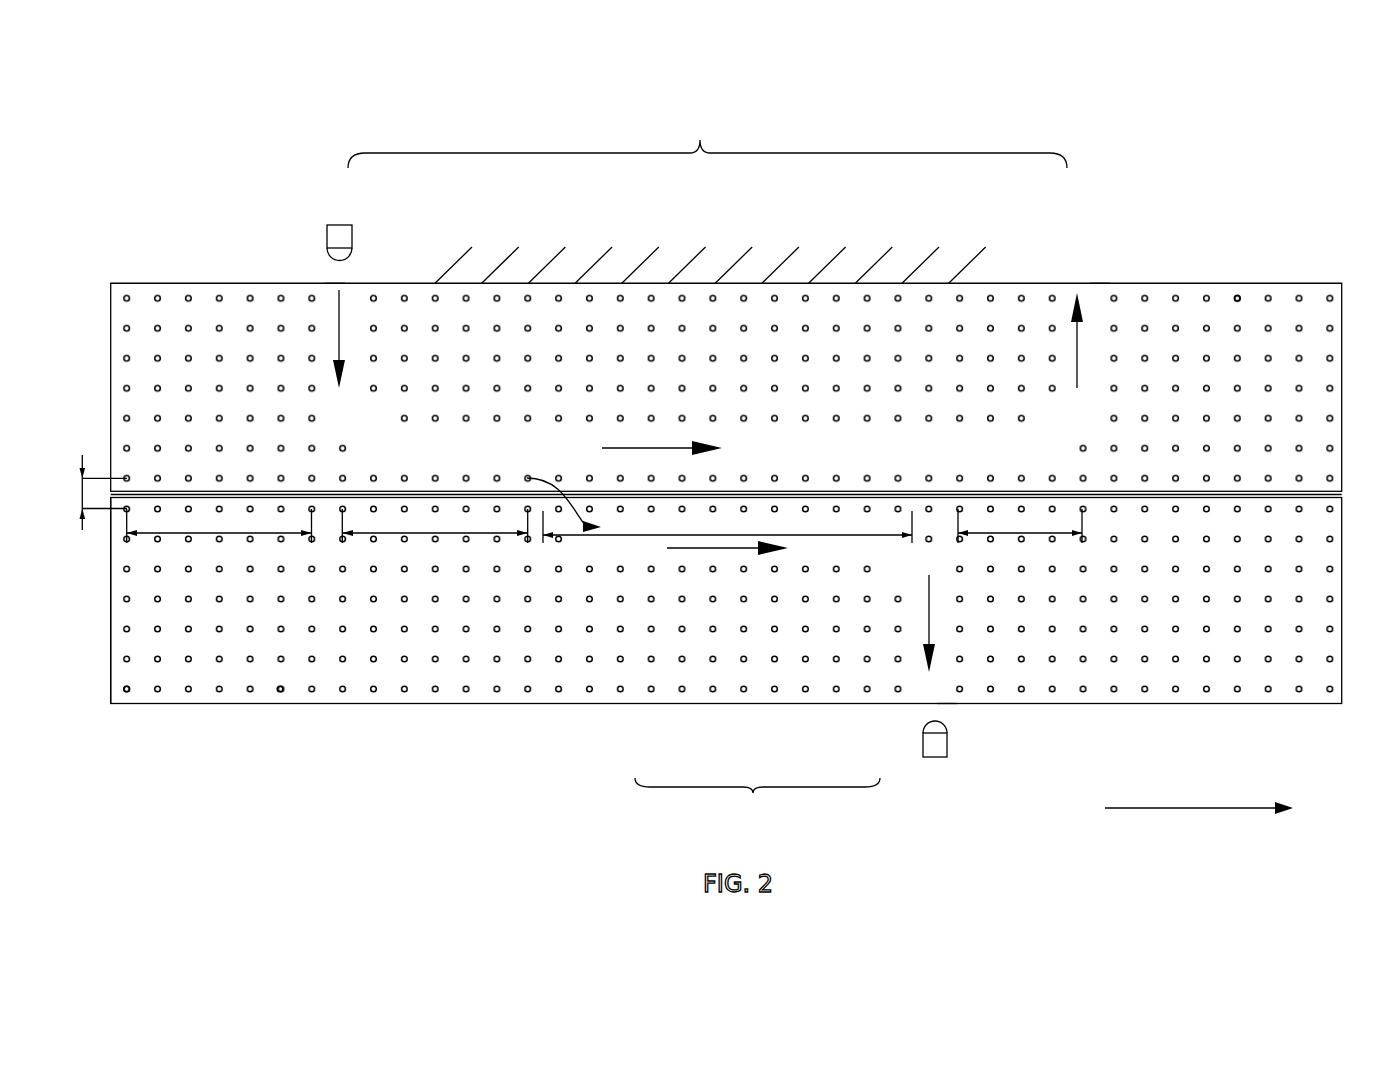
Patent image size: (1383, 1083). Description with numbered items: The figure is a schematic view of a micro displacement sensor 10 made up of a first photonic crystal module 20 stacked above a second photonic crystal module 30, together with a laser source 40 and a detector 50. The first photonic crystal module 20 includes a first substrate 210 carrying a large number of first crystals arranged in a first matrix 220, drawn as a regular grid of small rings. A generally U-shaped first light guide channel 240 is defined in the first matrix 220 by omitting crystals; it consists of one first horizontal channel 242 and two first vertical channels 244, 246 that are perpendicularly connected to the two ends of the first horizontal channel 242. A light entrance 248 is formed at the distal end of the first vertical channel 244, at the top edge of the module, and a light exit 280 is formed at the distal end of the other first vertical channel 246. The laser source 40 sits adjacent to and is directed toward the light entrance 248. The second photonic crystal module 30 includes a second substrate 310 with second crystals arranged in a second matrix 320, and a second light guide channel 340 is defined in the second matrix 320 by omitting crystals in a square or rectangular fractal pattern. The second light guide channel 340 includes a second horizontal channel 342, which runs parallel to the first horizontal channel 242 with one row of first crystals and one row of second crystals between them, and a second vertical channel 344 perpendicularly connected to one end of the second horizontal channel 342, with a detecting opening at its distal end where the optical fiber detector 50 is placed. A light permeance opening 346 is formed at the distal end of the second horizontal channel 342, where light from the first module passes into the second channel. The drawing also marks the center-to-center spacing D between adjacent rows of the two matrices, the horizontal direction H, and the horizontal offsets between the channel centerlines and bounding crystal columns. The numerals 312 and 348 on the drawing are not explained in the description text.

The micro displacement sensor 10 is at (886, 78).
The first photonic crystal module 20 is at (741, 346).
The second photonic crystal module 30 is at (706, 626).
The laser source 40 is at (338, 232).
The detector 50 is at (935, 743).
The first substrate 210 is at (1317, 287).
The first matrix 220 is at (1237, 297).
The first light guide channel 240 is at (708, 279).
The first horizontal channel 242 is at (766, 448).
The first vertical channel 244 is at (356, 302).
The first vertical channel 246 is at (1064, 340).
The light entrance 248 is at (331, 277).
The light exit 280 is at (1102, 278).
The second substrate 310 is at (147, 688).
The side surface of second plate 312 is at (110, 643).
The second matrix 320 is at (280, 688).
The second light guide channel 340 is at (731, 651).
The second horizontal channel 342 is at (645, 547).
The second vertical channel 344 is at (912, 680).
The light permeance opening 346 is at (560, 543).
The outlet of second plate 348 is at (952, 710).